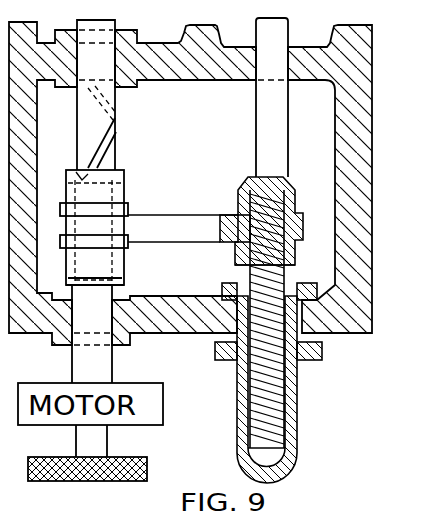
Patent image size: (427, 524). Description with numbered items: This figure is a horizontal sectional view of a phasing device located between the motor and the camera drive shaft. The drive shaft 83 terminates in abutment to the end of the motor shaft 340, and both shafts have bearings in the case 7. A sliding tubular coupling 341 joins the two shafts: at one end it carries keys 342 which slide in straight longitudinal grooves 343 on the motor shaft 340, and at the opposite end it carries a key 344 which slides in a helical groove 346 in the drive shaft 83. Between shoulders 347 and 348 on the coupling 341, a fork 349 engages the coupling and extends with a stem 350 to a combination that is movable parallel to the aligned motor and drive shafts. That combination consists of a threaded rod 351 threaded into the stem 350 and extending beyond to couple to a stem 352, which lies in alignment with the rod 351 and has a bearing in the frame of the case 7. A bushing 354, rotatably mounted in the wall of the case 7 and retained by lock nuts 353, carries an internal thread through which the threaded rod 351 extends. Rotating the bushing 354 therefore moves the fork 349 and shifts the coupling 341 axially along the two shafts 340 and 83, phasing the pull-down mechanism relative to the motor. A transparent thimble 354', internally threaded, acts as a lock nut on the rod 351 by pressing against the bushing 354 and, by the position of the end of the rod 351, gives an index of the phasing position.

The case 7 is at (352, 218).
The drive shaft 83 is at (80, 98).
The motor shaft 340 is at (100, 366).
The sliding tubular coupling 341 is at (116, 180).
The keys 342 is at (115, 283).
The straight longitudinal grooves 343 is at (115, 263).
The key 344 is at (72, 168).
The helical groove 346 is at (104, 147).
The shoulder 347 is at (128, 243).
The shoulder 348 is at (125, 205).
The fork 349 is at (97, 222).
The stem 350 is at (237, 215).
The threaded rod 351 is at (250, 270).
The stem 352 is at (263, 112).
The lock nuts 353 is at (222, 289).
The bushing 354 is at (244, 389).
The transparent thimble 354' is at (210, 360).